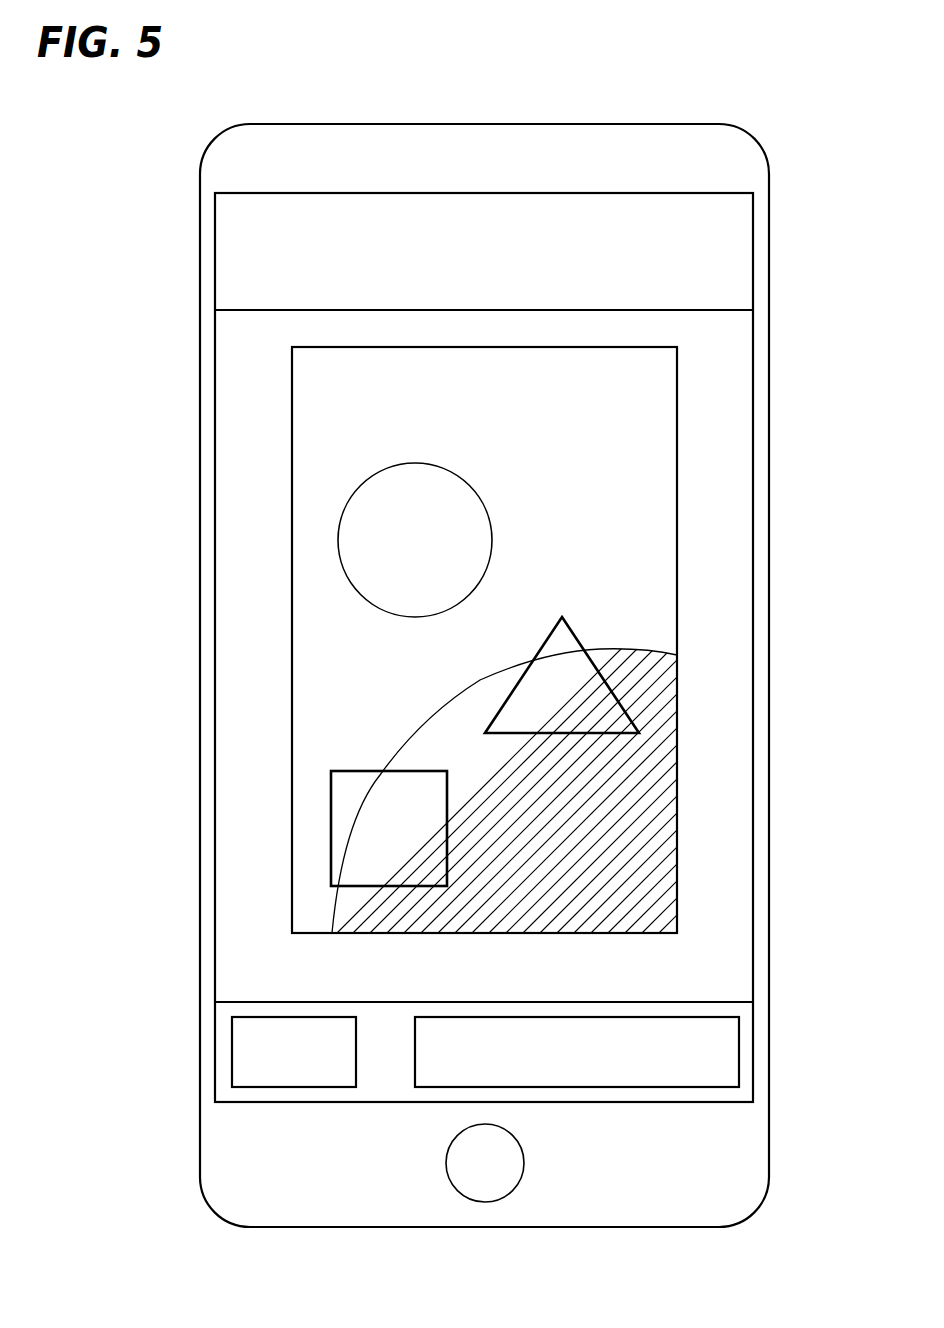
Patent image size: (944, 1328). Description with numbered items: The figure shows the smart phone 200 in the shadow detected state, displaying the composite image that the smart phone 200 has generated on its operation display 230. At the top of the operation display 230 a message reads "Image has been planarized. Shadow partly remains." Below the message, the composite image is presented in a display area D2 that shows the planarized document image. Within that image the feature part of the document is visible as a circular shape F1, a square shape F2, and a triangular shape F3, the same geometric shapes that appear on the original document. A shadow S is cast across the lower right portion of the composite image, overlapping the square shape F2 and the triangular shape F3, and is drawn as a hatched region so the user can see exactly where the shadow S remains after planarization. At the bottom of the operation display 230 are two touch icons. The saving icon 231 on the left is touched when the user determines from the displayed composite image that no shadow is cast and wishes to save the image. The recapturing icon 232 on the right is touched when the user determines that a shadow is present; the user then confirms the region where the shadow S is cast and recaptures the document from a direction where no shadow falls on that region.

The smart phone 200 is at (772, 227).
The operation display 230 is at (753, 350).
The planarized image display area D2 is at (676, 578).
The circular shape F1 is at (468, 487).
The square shape F2 is at (374, 770).
The triangular shape F3 is at (575, 635).
The shadow S is at (452, 708).
The saving icon 231 is at (358, 1050).
The recapturing icon 232 is at (740, 1040).